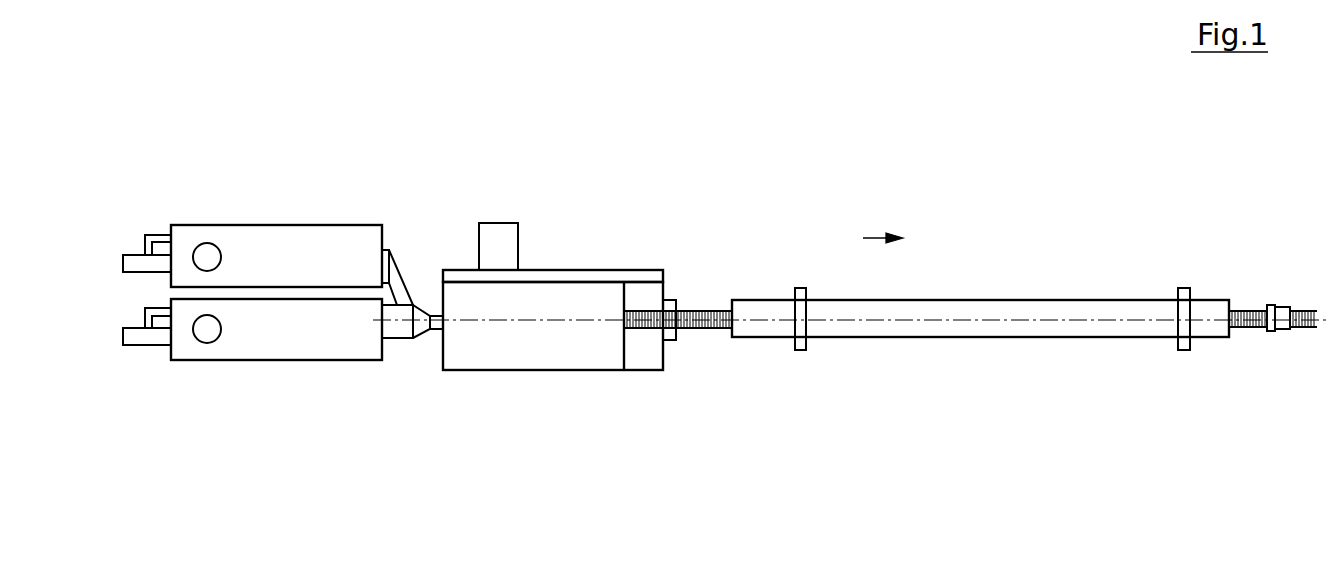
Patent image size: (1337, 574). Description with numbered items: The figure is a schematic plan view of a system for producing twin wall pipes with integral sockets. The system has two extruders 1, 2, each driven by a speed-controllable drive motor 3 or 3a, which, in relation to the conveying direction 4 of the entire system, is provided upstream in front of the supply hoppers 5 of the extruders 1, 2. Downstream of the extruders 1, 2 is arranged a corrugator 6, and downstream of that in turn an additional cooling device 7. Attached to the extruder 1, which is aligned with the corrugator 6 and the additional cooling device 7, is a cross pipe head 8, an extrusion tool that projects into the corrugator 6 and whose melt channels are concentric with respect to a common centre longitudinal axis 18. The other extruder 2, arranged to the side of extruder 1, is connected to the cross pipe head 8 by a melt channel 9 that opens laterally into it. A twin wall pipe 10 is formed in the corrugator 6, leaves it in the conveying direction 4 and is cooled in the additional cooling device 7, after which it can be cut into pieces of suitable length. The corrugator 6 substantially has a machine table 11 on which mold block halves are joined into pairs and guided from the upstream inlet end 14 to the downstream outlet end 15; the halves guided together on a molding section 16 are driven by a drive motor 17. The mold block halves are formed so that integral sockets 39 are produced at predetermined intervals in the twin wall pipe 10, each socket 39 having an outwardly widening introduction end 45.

The extruder 1 is at (289, 341).
The extruder 2 is at (289, 268).
The drive motor 3 is at (147, 337).
The drive motor 3a is at (130, 263).
The conveying direction 4 is at (878, 238).
The supply hopper 5 is at (207, 255).
The corrugator 6 is at (548, 371).
The additional cooling device 7 is at (1011, 336).
The cross pipe head 8 is at (397, 328).
The melt channel 9 is at (401, 255).
The twin wall pipe 10 is at (700, 310).
The machine table 11 is at (650, 352).
The inlet end 14 is at (441, 335).
The outlet end 15 is at (627, 347).
The molding section 16 is at (520, 347).
The drive motor 17 is at (502, 237).
The centre longitudinal axis 18 is at (913, 318).
The integral socket 39 is at (1283, 331).
The introduction end 45 is at (1268, 305).